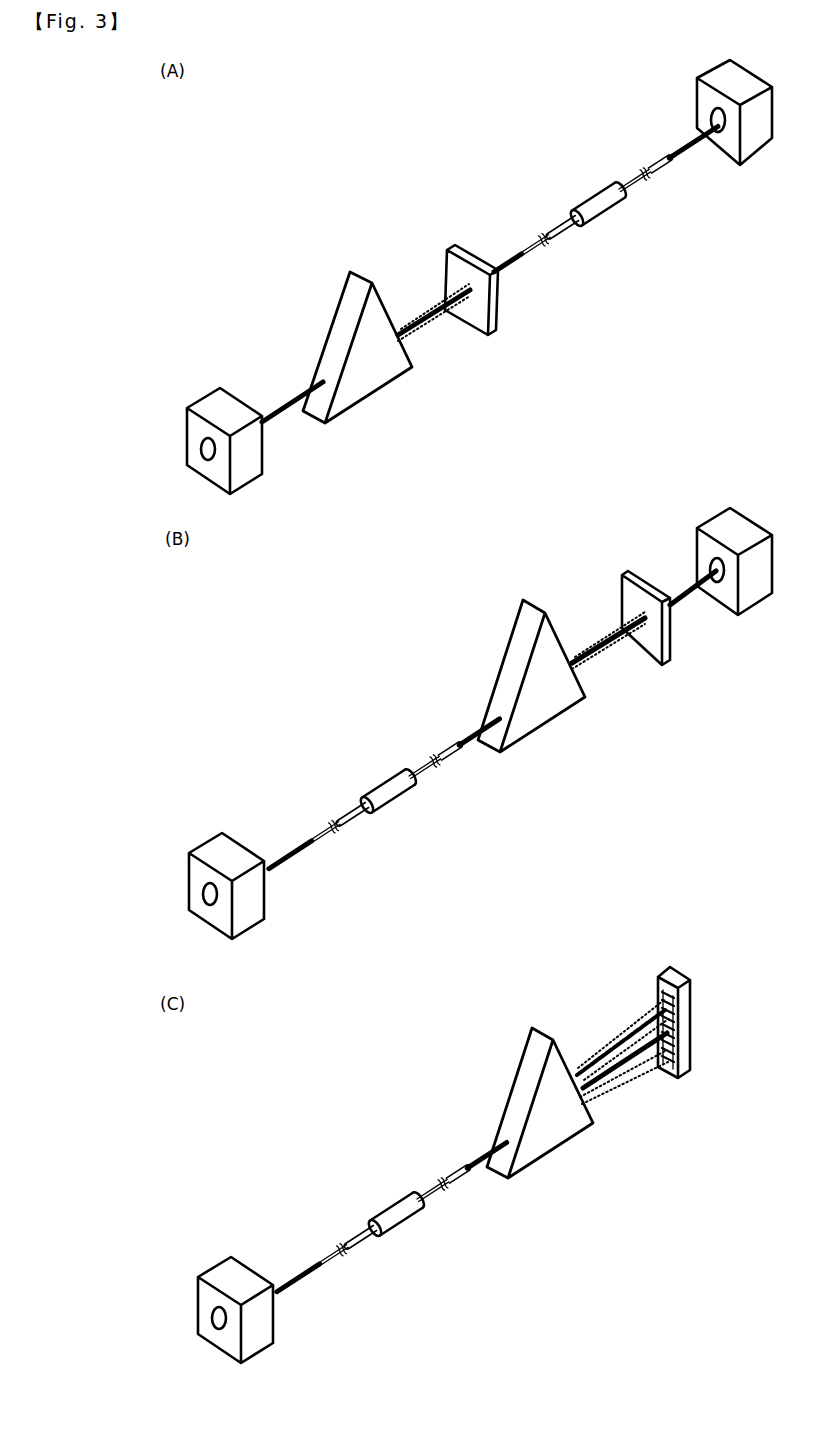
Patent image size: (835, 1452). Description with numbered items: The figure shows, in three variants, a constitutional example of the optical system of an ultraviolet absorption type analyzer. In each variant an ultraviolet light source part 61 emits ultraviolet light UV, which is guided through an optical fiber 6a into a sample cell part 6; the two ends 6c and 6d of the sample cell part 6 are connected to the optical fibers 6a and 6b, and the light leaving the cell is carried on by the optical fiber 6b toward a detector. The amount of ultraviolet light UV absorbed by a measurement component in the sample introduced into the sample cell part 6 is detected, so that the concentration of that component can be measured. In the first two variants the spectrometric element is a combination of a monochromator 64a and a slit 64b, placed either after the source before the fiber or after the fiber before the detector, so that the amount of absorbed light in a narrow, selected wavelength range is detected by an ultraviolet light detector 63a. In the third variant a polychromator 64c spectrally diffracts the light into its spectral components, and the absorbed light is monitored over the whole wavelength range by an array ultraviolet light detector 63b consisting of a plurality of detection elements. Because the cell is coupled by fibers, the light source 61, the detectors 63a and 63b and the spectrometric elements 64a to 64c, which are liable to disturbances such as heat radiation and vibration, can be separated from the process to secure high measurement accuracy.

The sample cell part 6 is at (593, 193).
The optical fiber 6a is at (552, 225).
The optical fiber 6b is at (650, 160).
The end of sample cell part 6c is at (585, 223).
The end of sample cell part 6d is at (627, 195).
The ultraviolet light source part 61 is at (262, 448).
The ultraviolet light detector 63a is at (697, 108).
The array ultraviolet light detector 63b is at (658, 985).
The monochromator 64a is at (333, 317).
The slit 64b is at (445, 272).
The polychromator 64c is at (515, 1072).
The ultraviolet light UV is at (287, 405).